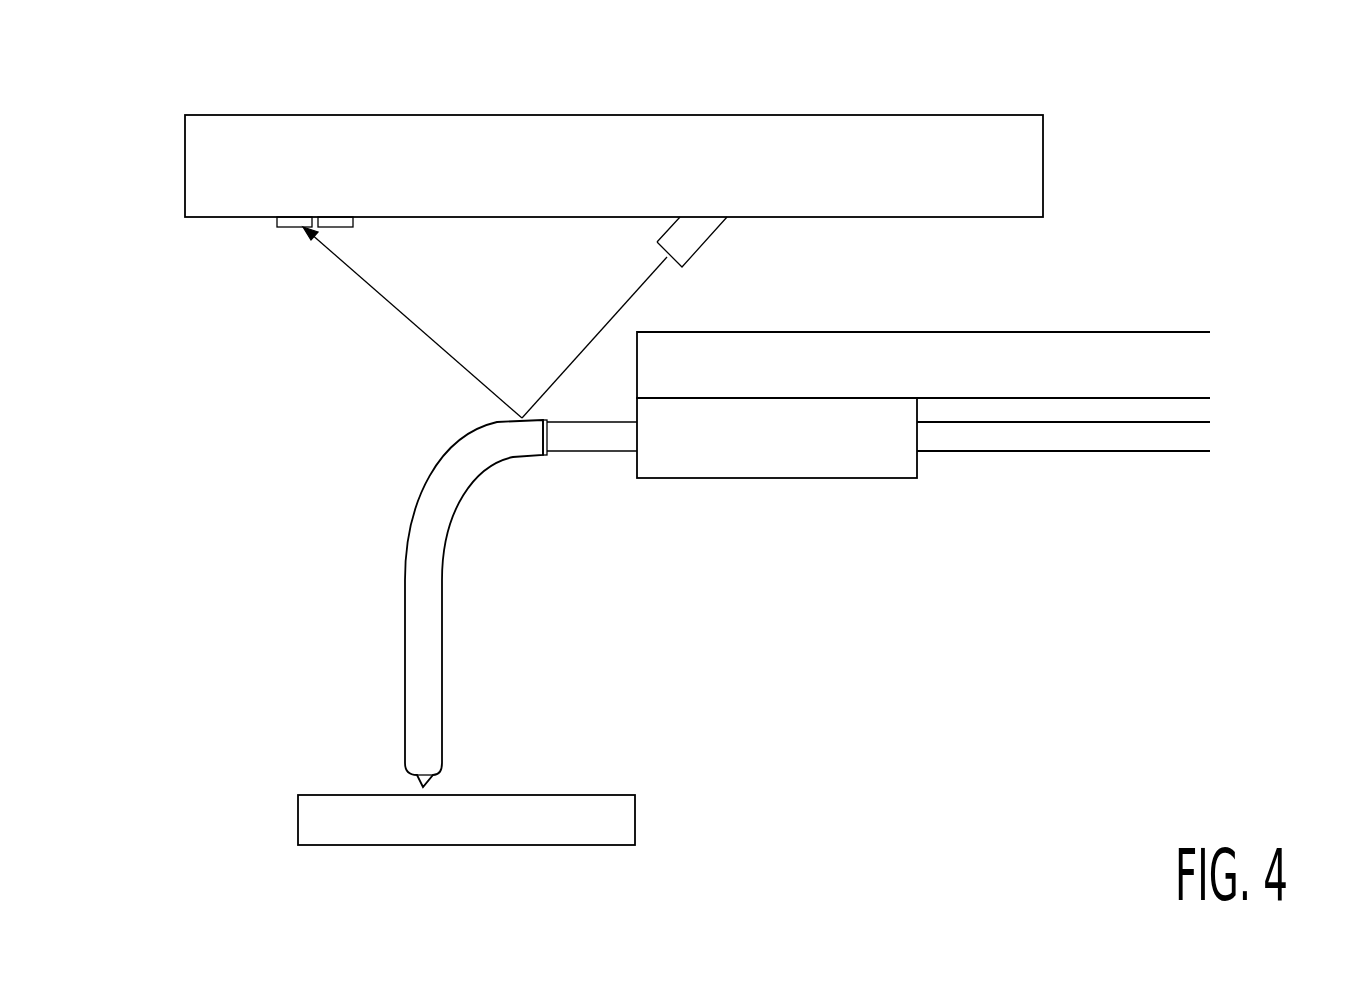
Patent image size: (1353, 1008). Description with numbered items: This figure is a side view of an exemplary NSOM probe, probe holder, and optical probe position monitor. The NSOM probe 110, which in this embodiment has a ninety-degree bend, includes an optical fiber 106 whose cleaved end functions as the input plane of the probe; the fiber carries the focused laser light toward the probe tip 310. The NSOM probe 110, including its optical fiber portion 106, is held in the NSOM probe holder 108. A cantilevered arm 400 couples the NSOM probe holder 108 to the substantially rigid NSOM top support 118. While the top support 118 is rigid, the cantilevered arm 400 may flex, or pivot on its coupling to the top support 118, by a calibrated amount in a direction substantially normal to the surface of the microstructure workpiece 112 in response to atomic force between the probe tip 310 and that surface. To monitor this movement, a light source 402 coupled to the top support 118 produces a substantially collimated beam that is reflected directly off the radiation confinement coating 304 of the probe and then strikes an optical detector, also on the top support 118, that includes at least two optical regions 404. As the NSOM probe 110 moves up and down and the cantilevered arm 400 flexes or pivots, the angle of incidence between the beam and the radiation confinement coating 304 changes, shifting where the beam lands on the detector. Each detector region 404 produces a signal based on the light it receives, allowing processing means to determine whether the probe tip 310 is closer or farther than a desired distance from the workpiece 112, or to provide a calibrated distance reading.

The optical fiber 106 is at (1042, 451).
The NSOM probe holder 108 is at (772, 478).
The NSOM probe 110 is at (429, 603).
The microstructure workpiece 112 is at (298, 825).
The NSOM top support 118 is at (1043, 148).
The radiation confinement coating 304 is at (452, 525).
The probe tip 310 is at (420, 782).
The cantilevered arm 400 is at (1072, 333).
The light source 402 is at (702, 225).
The optical regions 404 is at (344, 220).